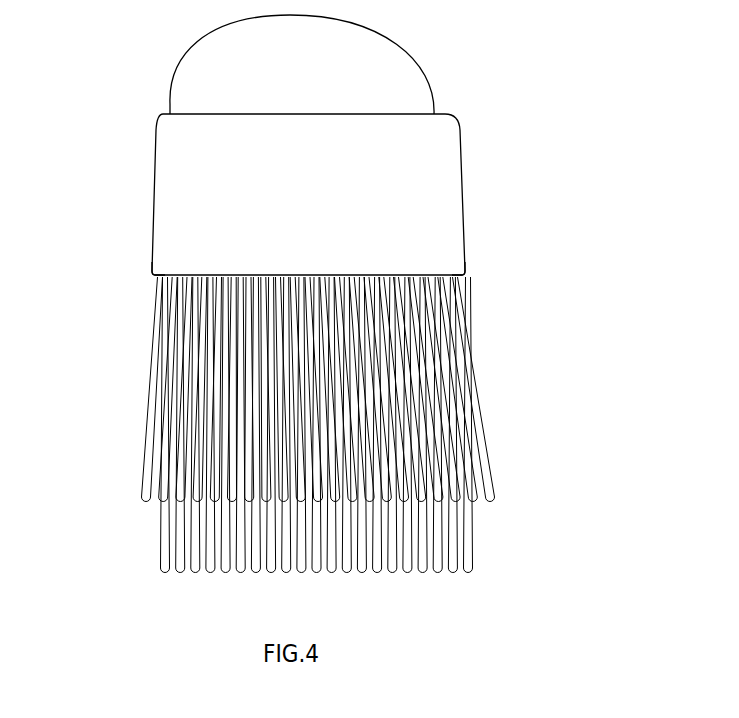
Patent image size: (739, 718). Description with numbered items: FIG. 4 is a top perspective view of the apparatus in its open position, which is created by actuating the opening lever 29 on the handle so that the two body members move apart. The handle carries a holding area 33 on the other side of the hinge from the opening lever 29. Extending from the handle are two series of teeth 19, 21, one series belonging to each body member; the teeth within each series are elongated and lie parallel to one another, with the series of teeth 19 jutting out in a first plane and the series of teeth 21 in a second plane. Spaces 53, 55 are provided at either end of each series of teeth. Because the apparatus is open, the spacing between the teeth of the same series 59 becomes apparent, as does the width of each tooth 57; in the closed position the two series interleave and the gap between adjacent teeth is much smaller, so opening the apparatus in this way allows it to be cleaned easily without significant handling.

The opening lever 29 is at (303, 36).
The holding area 33 is at (240, 178).
The space 53 is at (155, 275).
The space 55 is at (462, 277).
The series of teeth 19 is at (482, 465).
The series of teeth 21 is at (162, 528).
The width of each tooth 57 is at (184, 540).
The spacing between the teeth of the same series 59 is at (466, 555).